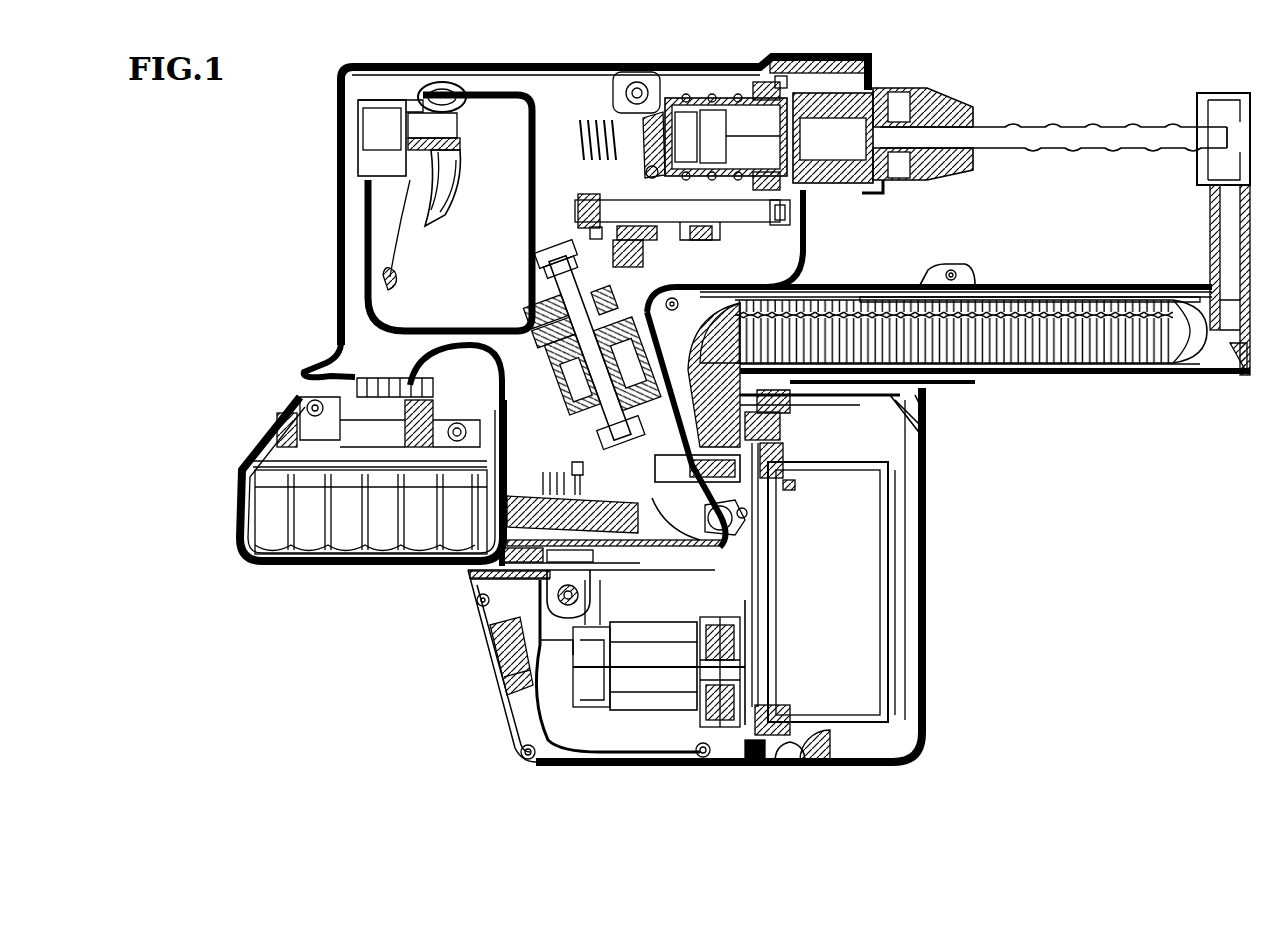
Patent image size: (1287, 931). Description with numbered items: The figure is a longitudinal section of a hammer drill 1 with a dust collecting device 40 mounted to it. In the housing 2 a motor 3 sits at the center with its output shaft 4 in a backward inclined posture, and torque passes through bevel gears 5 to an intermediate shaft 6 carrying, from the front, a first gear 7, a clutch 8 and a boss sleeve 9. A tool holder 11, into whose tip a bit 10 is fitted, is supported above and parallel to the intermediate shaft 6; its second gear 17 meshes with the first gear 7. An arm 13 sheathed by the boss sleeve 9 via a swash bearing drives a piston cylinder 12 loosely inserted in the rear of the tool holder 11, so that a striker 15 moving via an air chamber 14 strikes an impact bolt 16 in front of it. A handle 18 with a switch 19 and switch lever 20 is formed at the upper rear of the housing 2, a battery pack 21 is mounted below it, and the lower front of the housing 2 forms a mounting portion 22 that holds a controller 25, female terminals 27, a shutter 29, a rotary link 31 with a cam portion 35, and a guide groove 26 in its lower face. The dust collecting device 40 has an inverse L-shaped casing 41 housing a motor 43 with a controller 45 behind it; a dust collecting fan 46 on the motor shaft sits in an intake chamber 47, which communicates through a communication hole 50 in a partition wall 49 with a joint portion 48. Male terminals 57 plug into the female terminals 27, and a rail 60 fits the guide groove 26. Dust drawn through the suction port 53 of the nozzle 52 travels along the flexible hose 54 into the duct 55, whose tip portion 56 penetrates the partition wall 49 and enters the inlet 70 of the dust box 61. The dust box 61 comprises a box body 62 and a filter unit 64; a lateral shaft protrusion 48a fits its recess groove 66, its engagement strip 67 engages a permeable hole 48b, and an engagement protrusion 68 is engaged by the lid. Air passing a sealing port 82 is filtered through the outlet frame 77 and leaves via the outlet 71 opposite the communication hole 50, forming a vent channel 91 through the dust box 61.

The hammer drill 1 is at (583, 0).
The housing 2 is at (655, 90).
The motor 3 is at (548, 355).
The output shaft 4 is at (548, 305).
The bevel gears 5 is at (545, 258).
The intermediate shaft 6 is at (786, 213).
The first gear 7 is at (786, 240).
The clutch 8 is at (660, 130).
The boss sleeve 9 is at (612, 125).
The bit 10 is at (1058, 140).
The tool holder 11 is at (848, 62).
The piston cylinder 12 is at (740, 110).
The arm 13 is at (637, 95).
The air chamber 14 is at (708, 125).
The striker 15 is at (758, 110).
The impact bolt 16 is at (818, 130).
The second gear 17 is at (782, 82).
The handle 18 is at (338, 202).
The switch 19 is at (385, 135).
The switch lever 20 is at (466, 148).
The battery pack 21 is at (338, 520).
The mounting portion 22 is at (512, 617).
The controller 25 is at (490, 570).
The guide groove 26 is at (524, 760).
The female terminals 27 is at (655, 473).
The shutter 29 is at (746, 530).
The rotary link 31 is at (750, 560).
The cam portion 35 is at (670, 700).
The dust collecting device 40 is at (925, 270).
The casing 41 is at (870, 285).
The motor 43 is at (640, 690).
The controller 45 is at (510, 697).
The dust collecting fan 46 is at (722, 740).
The intake chamber 47 is at (752, 747).
The joint portion 48 is at (823, 393).
The lateral shaft protrusion 48a is at (792, 755).
The permeable hole 48b is at (878, 386).
The partition wall 49 is at (760, 600).
The communication hole 50 is at (760, 665).
The nozzle 52 is at (1160, 297).
The suction port 53 is at (1228, 108).
The flexible hose 54 is at (1038, 300).
The duct 55 is at (812, 378).
The tip portion 56 is at (779, 432).
The male terminals 57 is at (684, 462).
The rail 60 is at (575, 740).
The dust box 61 is at (928, 513).
The box body 62 is at (930, 680).
The filter unit 64 is at (888, 630).
The recess groove 66 is at (828, 745).
The engagement strip 67 is at (926, 418).
The engagement protrusion 68 is at (790, 412).
The inlet 70 is at (655, 322).
The outlet 71 is at (760, 696).
The outlet frame 77 is at (790, 488).
The sealing port 82 is at (779, 470).
The vent channel 91 is at (906, 572).